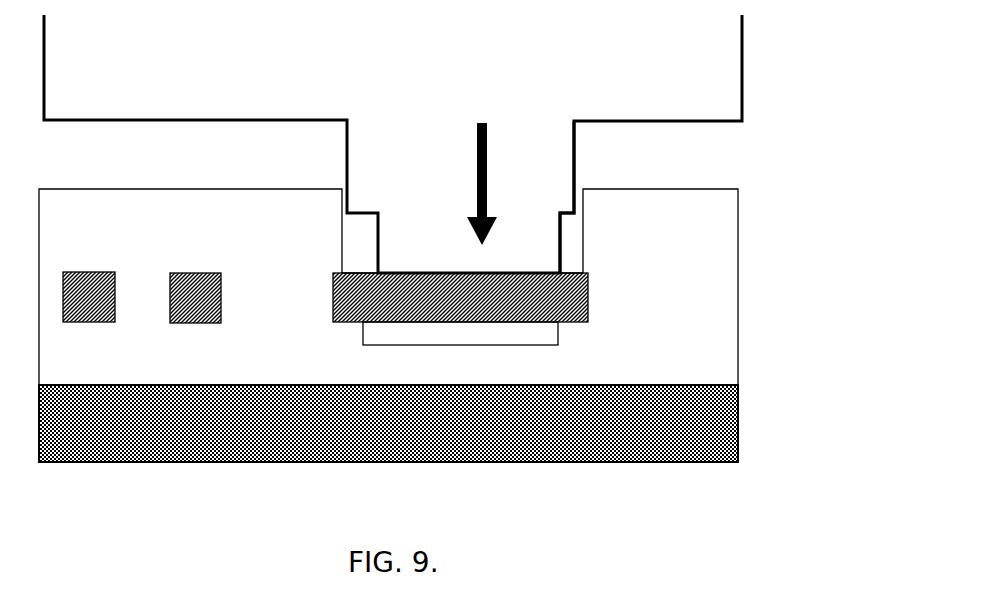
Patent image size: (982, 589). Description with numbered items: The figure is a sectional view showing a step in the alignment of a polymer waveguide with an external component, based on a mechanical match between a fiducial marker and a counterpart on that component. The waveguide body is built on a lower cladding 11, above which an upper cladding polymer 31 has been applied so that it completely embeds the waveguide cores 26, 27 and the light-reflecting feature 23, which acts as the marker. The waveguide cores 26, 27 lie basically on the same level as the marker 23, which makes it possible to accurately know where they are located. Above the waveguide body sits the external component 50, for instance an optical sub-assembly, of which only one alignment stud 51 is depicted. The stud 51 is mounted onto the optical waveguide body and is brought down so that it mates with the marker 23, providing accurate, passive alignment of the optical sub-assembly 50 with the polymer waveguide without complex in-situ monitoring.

The external component 50 is at (677, 119).
The stud 51 is at (538, 215).
The upper cladding polymer 31 is at (681, 271).
The light-reflecting feature 23 is at (588, 318).
The waveguide core 27 is at (97, 283).
The waveguide core 26 is at (198, 310).
The lower cladding 11 is at (582, 382).